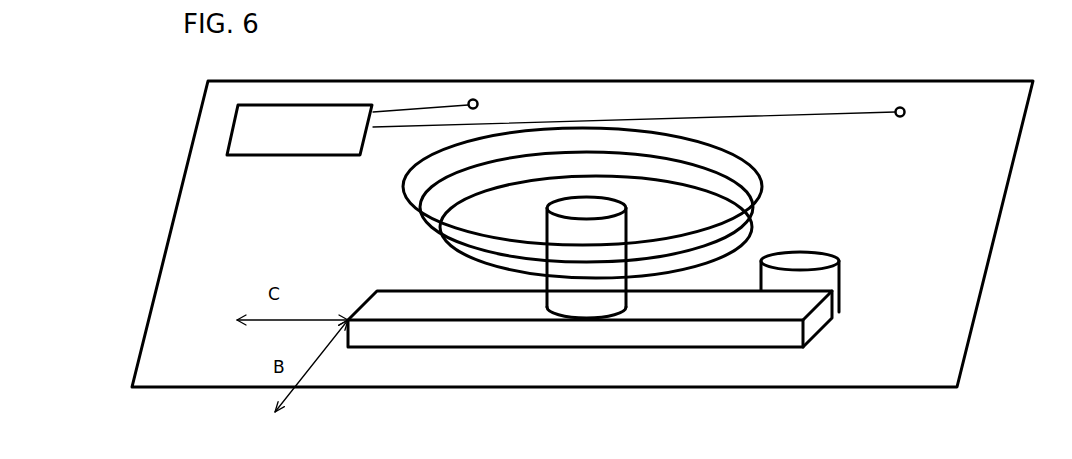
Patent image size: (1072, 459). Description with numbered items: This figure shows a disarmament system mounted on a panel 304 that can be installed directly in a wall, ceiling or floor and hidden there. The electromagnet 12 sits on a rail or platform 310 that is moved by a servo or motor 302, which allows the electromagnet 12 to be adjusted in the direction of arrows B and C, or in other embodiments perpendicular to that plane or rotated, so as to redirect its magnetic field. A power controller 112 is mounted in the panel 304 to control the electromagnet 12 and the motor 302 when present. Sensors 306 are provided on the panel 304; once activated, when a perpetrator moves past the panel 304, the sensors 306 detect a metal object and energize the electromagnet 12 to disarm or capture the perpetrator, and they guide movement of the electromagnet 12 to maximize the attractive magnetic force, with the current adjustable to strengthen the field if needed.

The electromagnet 12 is at (767, 175).
The power controller 112 is at (302, 118).
The servo or motor 302 is at (828, 252).
The panel 304 is at (963, 238).
The sensors 306 is at (477, 98).
The slide bar / rail 310 is at (810, 327).